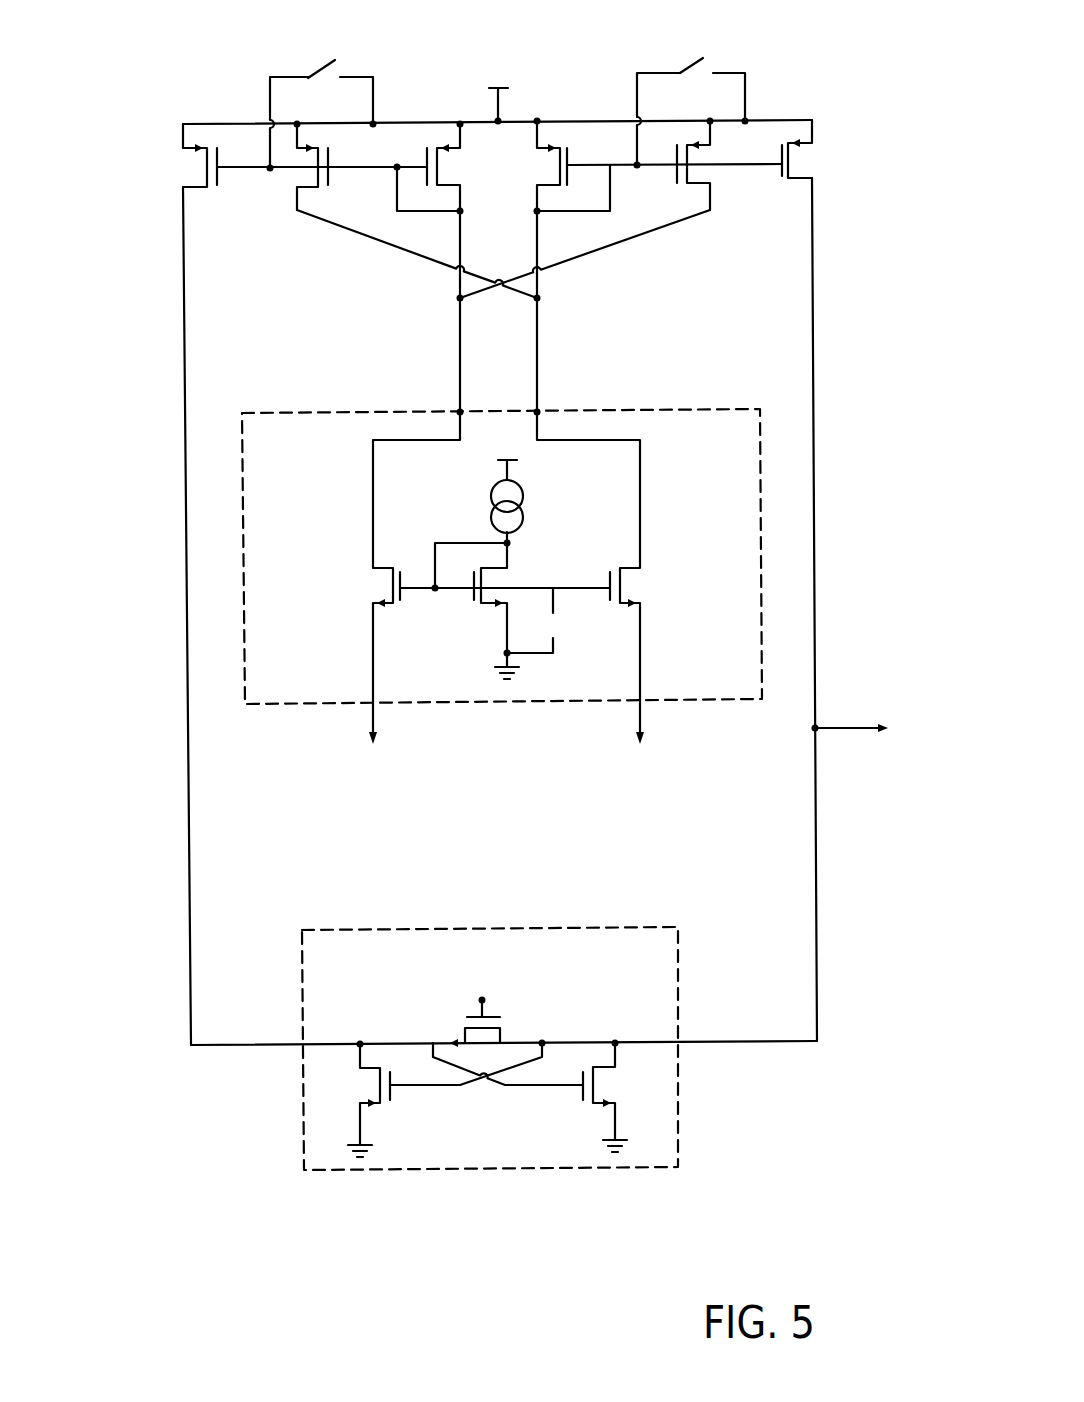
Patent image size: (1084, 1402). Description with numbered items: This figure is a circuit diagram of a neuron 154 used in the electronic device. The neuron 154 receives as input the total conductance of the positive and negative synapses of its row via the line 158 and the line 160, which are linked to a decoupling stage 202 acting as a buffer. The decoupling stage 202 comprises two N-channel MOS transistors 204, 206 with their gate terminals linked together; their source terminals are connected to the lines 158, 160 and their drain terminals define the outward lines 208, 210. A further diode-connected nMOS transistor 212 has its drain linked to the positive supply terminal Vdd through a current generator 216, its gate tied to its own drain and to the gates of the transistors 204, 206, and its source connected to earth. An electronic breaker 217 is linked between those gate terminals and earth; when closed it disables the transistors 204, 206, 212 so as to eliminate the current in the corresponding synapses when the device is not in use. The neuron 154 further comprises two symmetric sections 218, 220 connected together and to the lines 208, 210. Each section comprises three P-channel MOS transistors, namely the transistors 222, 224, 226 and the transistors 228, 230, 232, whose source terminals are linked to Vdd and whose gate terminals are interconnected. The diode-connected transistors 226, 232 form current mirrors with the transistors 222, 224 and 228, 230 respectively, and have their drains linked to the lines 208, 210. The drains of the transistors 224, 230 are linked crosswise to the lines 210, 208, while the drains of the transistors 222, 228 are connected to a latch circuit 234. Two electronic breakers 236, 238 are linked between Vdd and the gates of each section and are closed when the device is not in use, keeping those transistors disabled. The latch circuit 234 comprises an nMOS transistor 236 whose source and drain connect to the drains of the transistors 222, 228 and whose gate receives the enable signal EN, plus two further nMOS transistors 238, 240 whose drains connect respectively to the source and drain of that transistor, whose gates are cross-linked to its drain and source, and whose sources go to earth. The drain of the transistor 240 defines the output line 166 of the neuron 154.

The neuron 154 is at (232, 1080).
The line 158 is at (377, 748).
The line 160 is at (645, 738).
The output line 166 is at (848, 725).
The decoupling stage 202 is at (752, 492).
The N-channel MOS transistor 204 is at (380, 588).
The N-channel MOS transistor 206 is at (632, 587).
The outward line 208 is at (460, 410).
The outward line 210 is at (538, 410).
The nMOS transistor 212 is at (493, 580).
The current generator 216 is at (517, 517).
The electronic breaker 217 is at (553, 613).
The symmetric section 218 is at (372, 256).
The symmetric section 220 is at (630, 259).
The P-channel MOS transistor 222 is at (197, 168).
The P-channel MOS transistor 224 is at (308, 175).
The P-channel MOS transistor 226 is at (440, 172).
The P-channel MOS transistor 228 is at (798, 162).
The P-channel MOS transistor 230 is at (703, 170).
The P-channel MOS transistor 232 is at (548, 165).
The latch circuit 234 is at (668, 1085).
The electronic breaker / nMOS transistor 236 is at (333, 60).
The electronic breaker / nMOS transistor 238 is at (703, 58).
The nMOS transistor 240 is at (607, 1083).